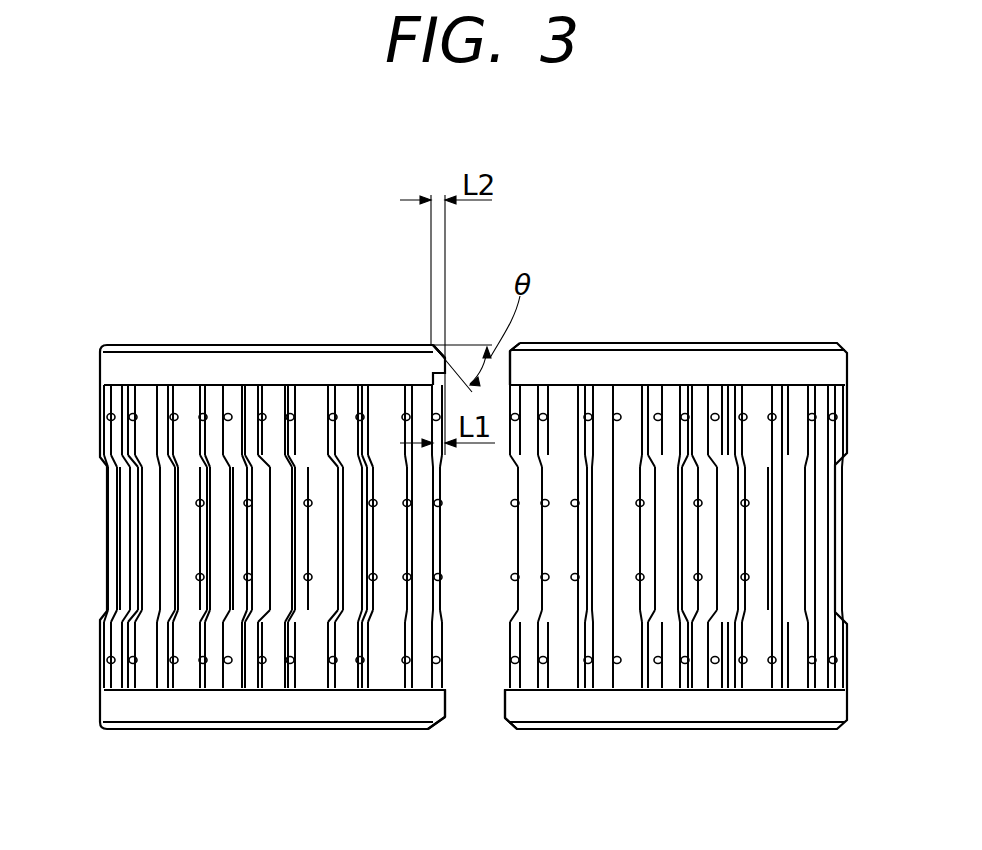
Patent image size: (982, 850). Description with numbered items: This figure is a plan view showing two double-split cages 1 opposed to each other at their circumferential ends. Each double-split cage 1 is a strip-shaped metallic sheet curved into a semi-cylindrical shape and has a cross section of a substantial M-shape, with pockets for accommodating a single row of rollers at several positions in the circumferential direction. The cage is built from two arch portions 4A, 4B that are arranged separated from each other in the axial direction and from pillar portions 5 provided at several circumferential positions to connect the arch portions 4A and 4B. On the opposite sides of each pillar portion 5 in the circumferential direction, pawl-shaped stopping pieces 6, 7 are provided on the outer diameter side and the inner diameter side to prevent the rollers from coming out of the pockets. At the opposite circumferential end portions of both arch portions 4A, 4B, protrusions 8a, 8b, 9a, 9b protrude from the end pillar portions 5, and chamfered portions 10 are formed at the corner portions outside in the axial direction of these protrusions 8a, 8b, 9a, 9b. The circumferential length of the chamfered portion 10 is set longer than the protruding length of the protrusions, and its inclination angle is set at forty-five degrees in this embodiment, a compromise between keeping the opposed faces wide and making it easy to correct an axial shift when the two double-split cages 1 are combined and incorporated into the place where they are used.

The double-split cage 1 is at (243, 342).
The arch portion 4A is at (180, 363).
The arch portion 4B is at (167, 706).
The pillar portion 5 is at (170, 497).
The pawl-shaped stopping piece 6 is at (288, 412).
The pawl-shaped stopping piece 7 is at (247, 577).
The protrusion 8a is at (506, 372).
The protrusion 8b is at (512, 702).
The protrusion 9a is at (447, 362).
The protrusion 9b is at (442, 697).
The chamfered portion 10 is at (432, 346).